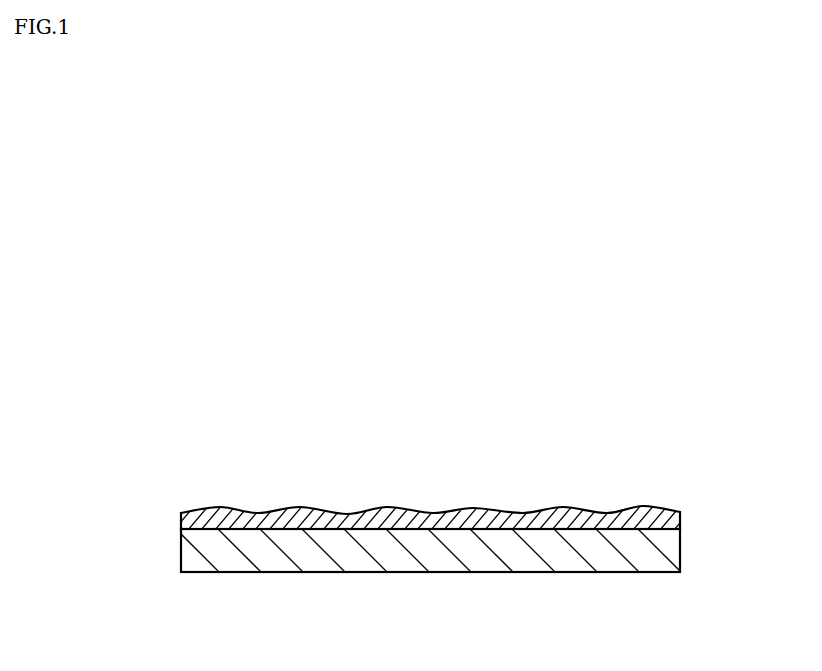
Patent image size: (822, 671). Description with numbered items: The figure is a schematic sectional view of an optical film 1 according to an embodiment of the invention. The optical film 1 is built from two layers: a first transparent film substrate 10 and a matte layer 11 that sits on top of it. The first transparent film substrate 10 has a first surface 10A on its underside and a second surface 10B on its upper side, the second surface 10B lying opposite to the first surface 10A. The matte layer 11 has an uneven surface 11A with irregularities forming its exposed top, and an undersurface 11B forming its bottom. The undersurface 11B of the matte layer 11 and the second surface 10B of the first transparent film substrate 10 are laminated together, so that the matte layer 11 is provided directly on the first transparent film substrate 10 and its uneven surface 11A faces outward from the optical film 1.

The optical film 1 is at (728, 418).
The first transparent film substrate 10 is at (680, 553).
The first surface 10A is at (530, 572).
The second surface 10B is at (523, 528).
The matte layer 11 is at (680, 518).
The uneven surface 11A is at (292, 508).
The undersurface 11B is at (292, 529).